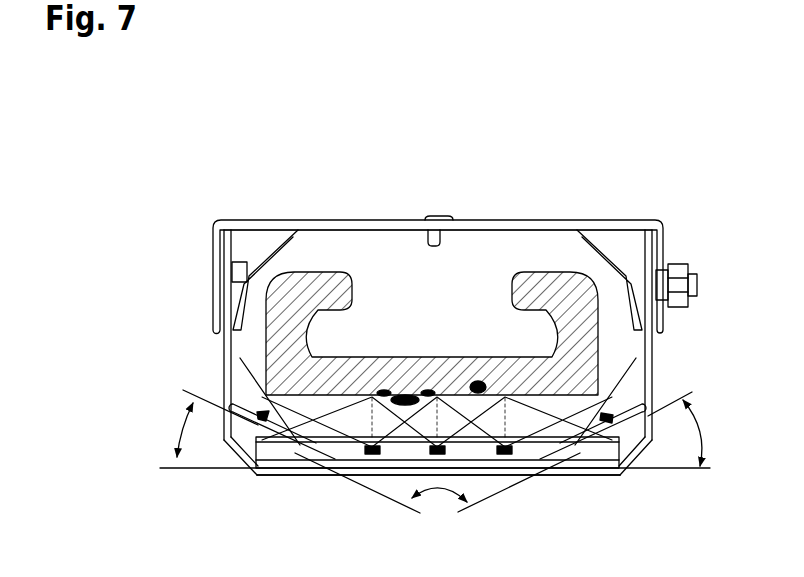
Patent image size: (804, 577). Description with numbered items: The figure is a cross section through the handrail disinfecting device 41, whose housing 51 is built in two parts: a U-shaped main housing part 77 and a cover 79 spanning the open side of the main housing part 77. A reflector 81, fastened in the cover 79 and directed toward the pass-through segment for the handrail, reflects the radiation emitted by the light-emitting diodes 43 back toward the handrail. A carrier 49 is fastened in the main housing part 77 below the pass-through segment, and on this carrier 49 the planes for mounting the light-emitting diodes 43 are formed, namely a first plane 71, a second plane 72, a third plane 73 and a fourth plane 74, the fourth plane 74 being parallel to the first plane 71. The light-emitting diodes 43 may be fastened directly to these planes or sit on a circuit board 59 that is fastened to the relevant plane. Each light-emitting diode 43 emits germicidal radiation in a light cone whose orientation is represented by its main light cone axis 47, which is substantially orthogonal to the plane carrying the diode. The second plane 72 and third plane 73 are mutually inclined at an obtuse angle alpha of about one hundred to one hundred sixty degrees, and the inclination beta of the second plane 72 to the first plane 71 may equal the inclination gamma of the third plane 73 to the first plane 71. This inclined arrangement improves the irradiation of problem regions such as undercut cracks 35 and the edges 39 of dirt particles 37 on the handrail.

The handrail disinfecting device 41 is at (185, 163).
The undercut cracks 35 is at (477, 385).
The dirt particles 37 is at (405, 397).
The edges 39 is at (428, 393).
The cover 79 is at (633, 221).
The reflector 81 is at (598, 230).
The main light cone axis 47 is at (240, 378).
The main housing part 77 is at (658, 343).
The housing 51 is at (672, 354).
The circuit board 59 is at (235, 407).
The third plane 73 is at (243, 446).
The second plane 72 is at (629, 444).
The carrier 49 is at (575, 462).
The first plane 71 is at (372, 456).
The fourth plane 74 is at (438, 513).
The light-emitting diodes 43 is at (310, 455).